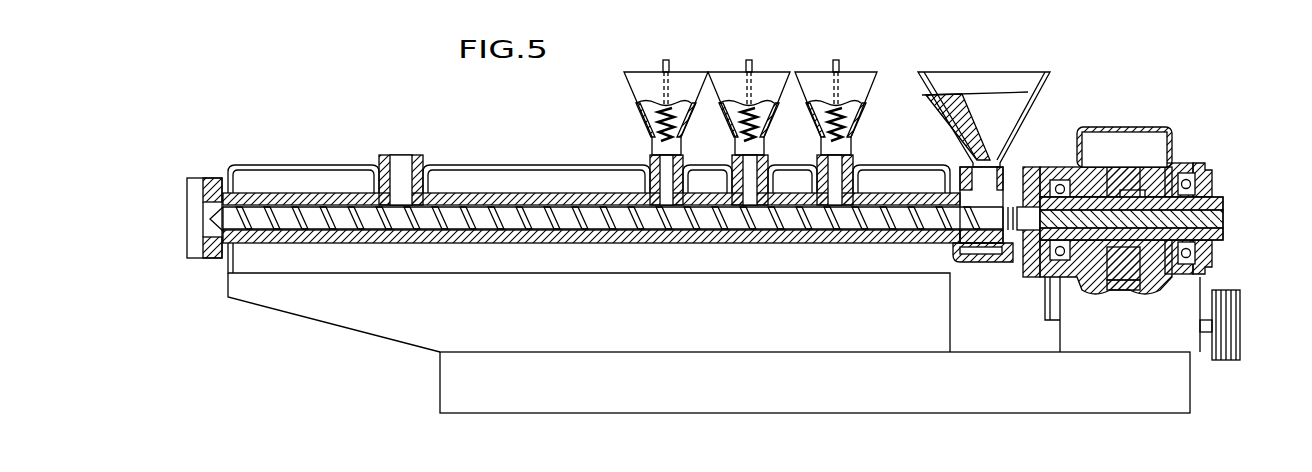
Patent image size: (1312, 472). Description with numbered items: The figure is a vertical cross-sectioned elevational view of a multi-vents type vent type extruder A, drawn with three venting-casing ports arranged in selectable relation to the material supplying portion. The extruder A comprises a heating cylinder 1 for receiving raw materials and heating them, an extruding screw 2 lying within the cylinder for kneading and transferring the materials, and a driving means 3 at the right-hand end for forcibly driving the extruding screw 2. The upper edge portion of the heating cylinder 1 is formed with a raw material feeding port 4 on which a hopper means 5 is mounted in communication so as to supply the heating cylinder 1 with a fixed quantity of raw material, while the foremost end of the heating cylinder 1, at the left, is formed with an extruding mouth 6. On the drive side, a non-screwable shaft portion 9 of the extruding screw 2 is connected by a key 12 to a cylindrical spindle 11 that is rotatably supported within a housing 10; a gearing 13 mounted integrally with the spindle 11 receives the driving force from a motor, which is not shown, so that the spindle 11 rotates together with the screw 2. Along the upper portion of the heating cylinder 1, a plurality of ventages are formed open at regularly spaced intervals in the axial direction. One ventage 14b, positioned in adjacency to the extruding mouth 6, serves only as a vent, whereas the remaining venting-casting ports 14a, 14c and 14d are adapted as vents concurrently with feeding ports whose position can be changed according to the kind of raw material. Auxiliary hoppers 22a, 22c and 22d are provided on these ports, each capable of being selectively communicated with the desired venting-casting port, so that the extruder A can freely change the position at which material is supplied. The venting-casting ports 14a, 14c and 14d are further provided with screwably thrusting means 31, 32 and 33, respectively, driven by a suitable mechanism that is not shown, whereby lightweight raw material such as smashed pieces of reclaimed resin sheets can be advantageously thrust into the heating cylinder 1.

The vent type extruder A is at (284, 106).
The heating cylinder 1 is at (720, 247).
The extruding screw 2 is at (498, 192).
The driving means 3 is at (1118, 336).
The raw material feeding port 4 is at (985, 193).
The hopper means 5 is at (937, 80).
The extruding mouth 6 is at (215, 222).
The non-screwable shaft portion 9 is at (1223, 217).
The housing 10 is at (1160, 128).
The cylindrical spindle 11 is at (1153, 242).
The key 12 is at (1135, 192).
The gearing 13 is at (1128, 160).
The venting-casting port 14a is at (835, 185).
The ventage 14b is at (400, 162).
The venting-casting port 14c is at (748, 185).
The venting-casting port 14d is at (665, 185).
The auxiliary hopper 22a is at (839, 95).
The auxiliary hopper 22c is at (741, 95).
The auxiliary hopper 22d is at (642, 107).
The screwably thrusting means 31 is at (850, 122).
The screwably thrusting means 32 is at (730, 120).
The screwably thrusting means 33 is at (645, 120).